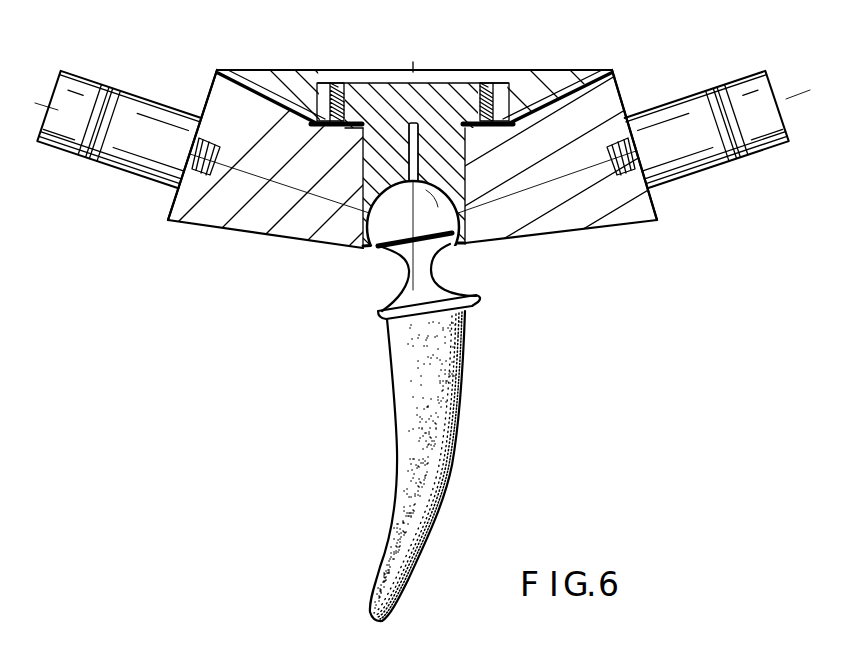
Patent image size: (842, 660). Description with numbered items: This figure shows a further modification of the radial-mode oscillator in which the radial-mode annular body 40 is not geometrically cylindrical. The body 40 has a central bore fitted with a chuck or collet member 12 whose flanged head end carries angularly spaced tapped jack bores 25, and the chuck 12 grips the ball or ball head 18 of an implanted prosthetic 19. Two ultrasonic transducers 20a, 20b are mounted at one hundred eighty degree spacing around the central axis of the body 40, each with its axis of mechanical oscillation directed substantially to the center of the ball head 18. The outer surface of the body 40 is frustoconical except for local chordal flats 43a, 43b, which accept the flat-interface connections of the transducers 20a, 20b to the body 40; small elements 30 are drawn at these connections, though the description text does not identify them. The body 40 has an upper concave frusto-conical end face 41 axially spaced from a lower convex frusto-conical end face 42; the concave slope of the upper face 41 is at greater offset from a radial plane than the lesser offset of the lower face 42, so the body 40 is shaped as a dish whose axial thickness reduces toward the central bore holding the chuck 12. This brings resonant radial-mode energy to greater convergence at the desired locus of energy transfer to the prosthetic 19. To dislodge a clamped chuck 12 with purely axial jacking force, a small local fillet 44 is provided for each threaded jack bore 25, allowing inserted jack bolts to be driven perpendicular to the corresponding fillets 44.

The chuck or collet member 12 is at (448, 80).
The ball head 18 is at (380, 249).
The implanted prosthetic 19 is at (458, 412).
The transducer 20a is at (749, 160).
The transducer 20b is at (87, 163).
The tapped bores 25 is at (342, 84).
The set screw insert 30 is at (184, 221).
The annular body 40 is at (264, 244).
The upper concave frusto-conical end face 41 is at (256, 69).
The lower convex frusto-conical end face 42 is at (520, 242).
The chordal flat 43a is at (658, 210).
The chordal flat 43b is at (212, 90).
The local fillet 44 is at (352, 140).